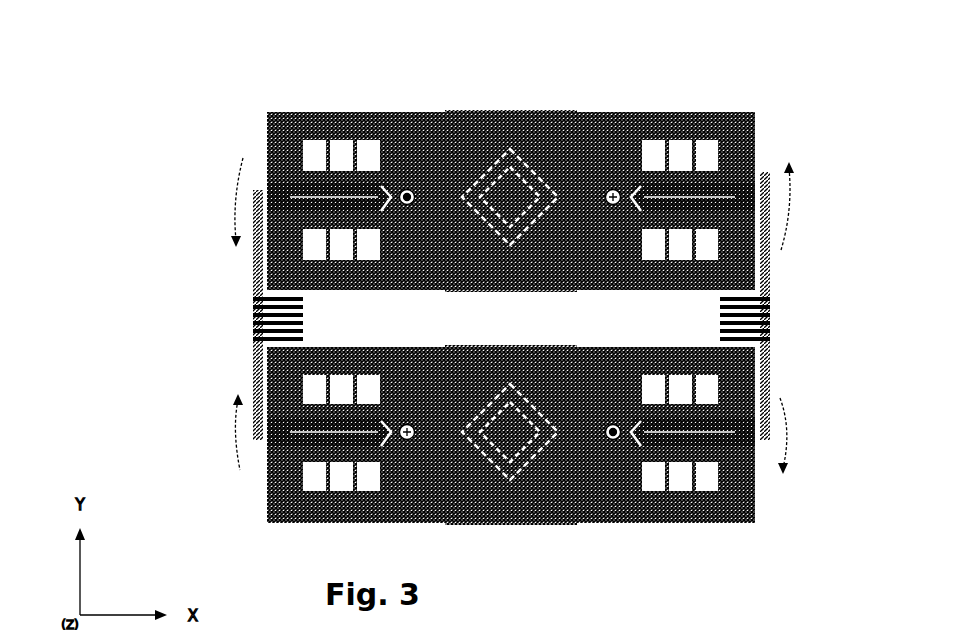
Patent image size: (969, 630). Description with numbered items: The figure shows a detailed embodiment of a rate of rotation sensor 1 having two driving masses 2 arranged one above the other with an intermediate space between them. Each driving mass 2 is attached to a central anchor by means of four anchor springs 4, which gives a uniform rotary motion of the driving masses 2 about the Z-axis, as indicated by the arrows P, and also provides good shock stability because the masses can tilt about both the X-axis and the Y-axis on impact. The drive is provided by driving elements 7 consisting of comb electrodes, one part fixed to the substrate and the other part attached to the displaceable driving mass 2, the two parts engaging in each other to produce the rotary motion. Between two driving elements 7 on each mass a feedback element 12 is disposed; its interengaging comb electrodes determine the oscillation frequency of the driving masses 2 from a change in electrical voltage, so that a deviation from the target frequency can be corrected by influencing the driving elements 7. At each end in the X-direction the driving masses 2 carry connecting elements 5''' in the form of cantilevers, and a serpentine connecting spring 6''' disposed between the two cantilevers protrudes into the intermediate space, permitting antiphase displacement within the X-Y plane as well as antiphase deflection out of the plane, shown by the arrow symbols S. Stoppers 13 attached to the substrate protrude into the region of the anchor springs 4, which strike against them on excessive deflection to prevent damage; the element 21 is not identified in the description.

The sensor 1 is at (187, 283).
The driving masses 2 is at (722, 155).
The anchor springs 4 is at (470, 192).
The driving elements 7 is at (331, 125).
The feedback elements 12 is at (290, 187).
The stoppers 13 is at (510, 473).
The inner hinge region 21 is at (530, 455).
The arrow symbols S is at (407, 189).
The arrows P is at (228, 197).
The connecting elements 5''' is at (517, 306).
The connecting spring 6''' is at (486, 319).